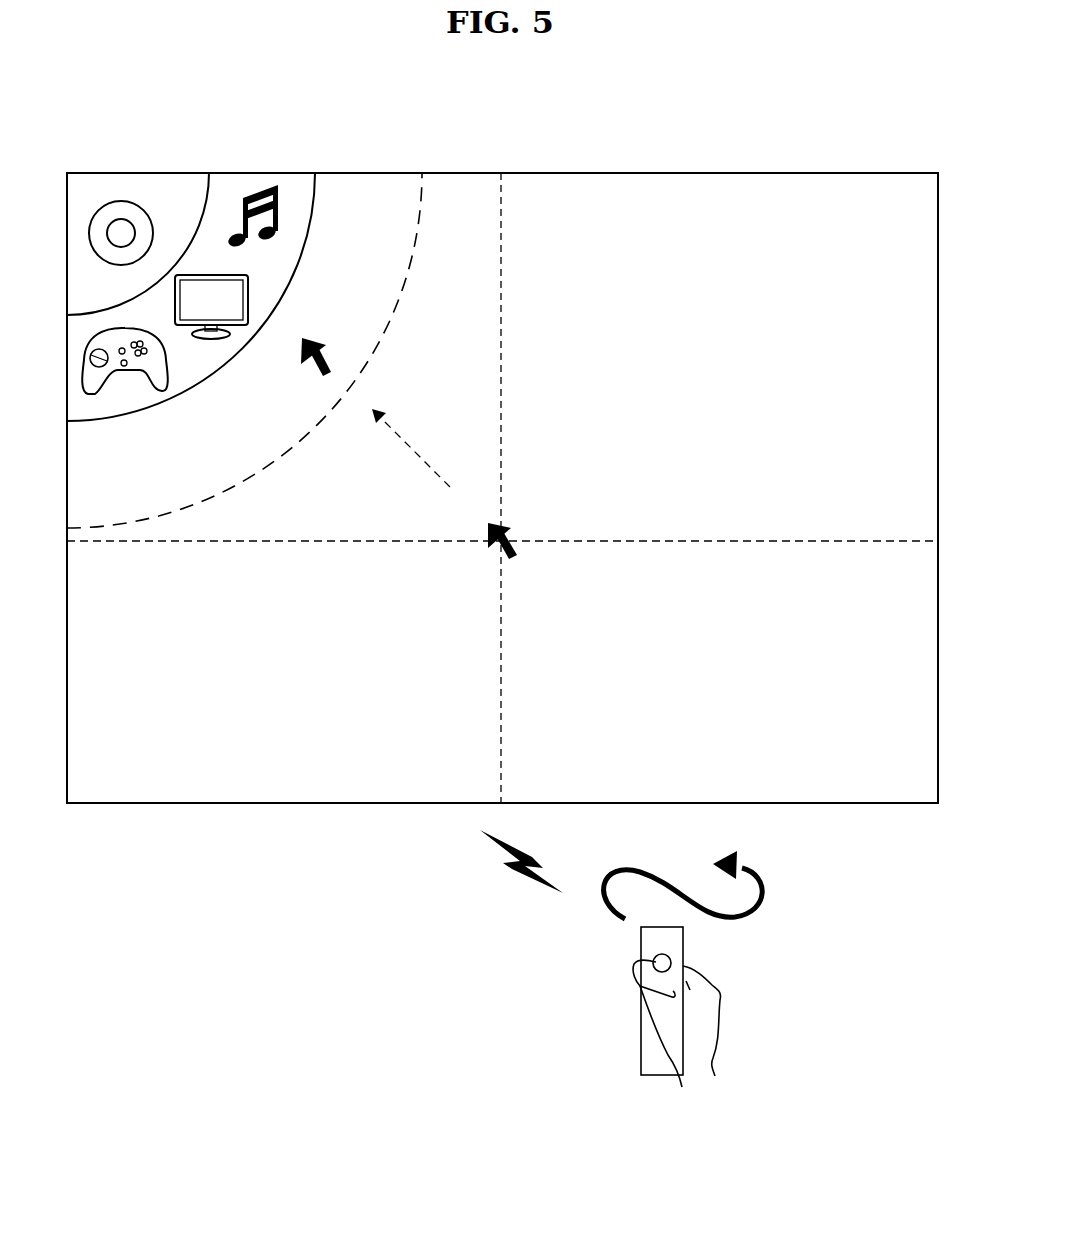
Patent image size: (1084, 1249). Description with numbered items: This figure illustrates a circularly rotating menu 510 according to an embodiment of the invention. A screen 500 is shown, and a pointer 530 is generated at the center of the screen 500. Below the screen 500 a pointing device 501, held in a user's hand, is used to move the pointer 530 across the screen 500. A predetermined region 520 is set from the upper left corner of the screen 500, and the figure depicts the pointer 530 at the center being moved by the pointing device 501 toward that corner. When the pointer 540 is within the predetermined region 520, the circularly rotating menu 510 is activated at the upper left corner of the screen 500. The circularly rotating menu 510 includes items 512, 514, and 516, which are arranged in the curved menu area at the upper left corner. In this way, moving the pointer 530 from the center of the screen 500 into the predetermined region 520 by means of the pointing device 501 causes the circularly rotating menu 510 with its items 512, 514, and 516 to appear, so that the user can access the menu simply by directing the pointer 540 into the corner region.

The screen 500 is at (597, 172).
The pointing device 501 is at (718, 993).
The circularly rotating menu 510 is at (233, 187).
The predetermined region 520 is at (364, 187).
The item 512 is at (276, 232).
The item 514 is at (212, 338).
The item 516 is at (122, 375).
The pointer 530 is at (508, 538).
The pointer 540 is at (320, 370).